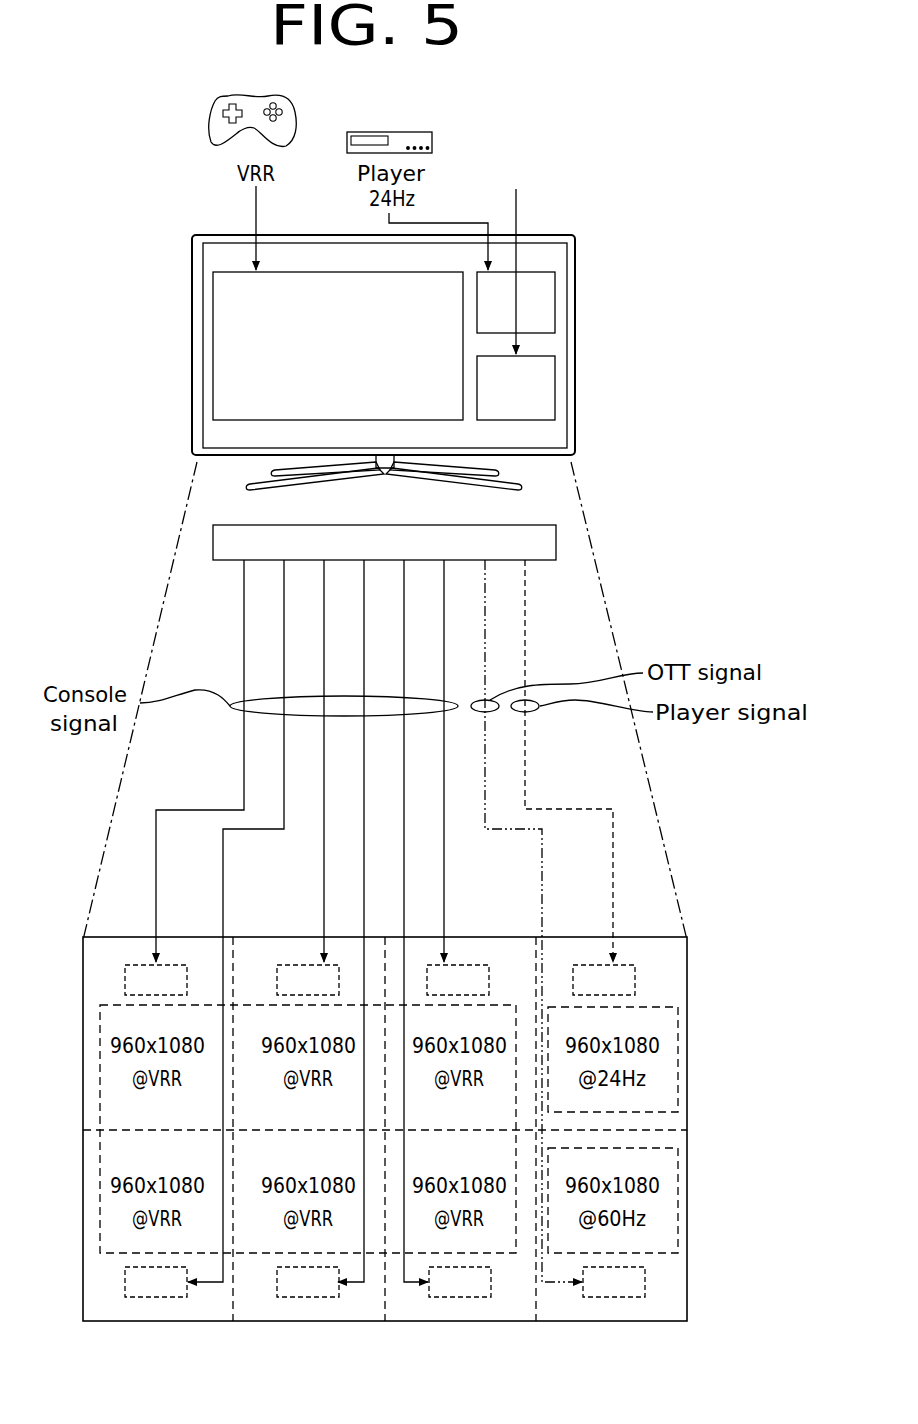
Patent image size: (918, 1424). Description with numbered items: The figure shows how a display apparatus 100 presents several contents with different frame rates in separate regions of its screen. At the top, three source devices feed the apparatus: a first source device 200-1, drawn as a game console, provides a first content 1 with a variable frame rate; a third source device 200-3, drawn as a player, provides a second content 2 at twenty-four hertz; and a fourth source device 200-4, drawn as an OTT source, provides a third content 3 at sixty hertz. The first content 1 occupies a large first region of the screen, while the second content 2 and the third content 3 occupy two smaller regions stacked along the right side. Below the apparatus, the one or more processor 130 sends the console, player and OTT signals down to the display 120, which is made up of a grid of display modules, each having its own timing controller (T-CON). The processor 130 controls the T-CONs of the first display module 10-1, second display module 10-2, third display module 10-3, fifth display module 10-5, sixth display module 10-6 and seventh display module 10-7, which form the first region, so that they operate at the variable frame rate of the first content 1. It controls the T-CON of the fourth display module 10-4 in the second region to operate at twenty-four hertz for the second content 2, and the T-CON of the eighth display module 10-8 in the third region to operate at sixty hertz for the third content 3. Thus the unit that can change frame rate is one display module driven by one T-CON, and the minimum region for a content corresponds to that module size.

The first source device 200-1 is at (212, 108).
The third source device 200-3 is at (404, 131).
The fourth source device 200-4 is at (513, 129).
The display apparatus 100 is at (576, 345).
The first content 1 is at (212, 324).
The second content 2 is at (556, 283).
The third content 3 is at (556, 398).
The processor 130 is at (557, 541).
The display 120 is at (688, 985).
The first display module 10-1 is at (118, 948).
The second display module 10-2 is at (254, 948).
The third display module 10-3 is at (499, 948).
The fourth display module 10-4 is at (649, 948).
The fifth display module 10-5 is at (155, 1322).
The sixth display module 10-6 is at (304, 1322).
The seventh display module 10-7 is at (448, 1322).
The eighth display module 10-8 is at (606, 1322).